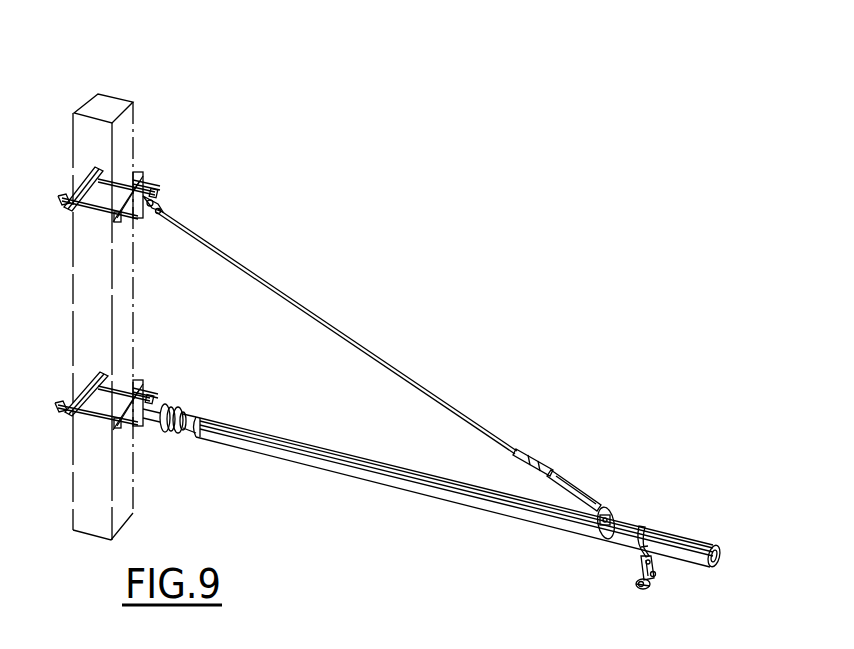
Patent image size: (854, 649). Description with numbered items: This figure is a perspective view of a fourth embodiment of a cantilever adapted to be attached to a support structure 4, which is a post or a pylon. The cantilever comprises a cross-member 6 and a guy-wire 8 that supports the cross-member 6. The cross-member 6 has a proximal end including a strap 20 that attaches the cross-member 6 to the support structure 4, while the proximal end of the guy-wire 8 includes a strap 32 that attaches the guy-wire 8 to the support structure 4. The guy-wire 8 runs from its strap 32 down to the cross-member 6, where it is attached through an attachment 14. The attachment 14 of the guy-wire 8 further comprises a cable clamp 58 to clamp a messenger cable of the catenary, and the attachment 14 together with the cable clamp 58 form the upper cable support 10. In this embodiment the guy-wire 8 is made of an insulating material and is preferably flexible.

The support structure 4 is at (68, 73).
The strap 32 is at (134, 186).
The guy-wire 8 is at (322, 312).
The cross-member 6 is at (412, 503).
The strap 20 is at (135, 402).
The attachment 14 is at (650, 522).
The upper cable support 10 is at (653, 585).
The cable clamp 58 is at (640, 580).